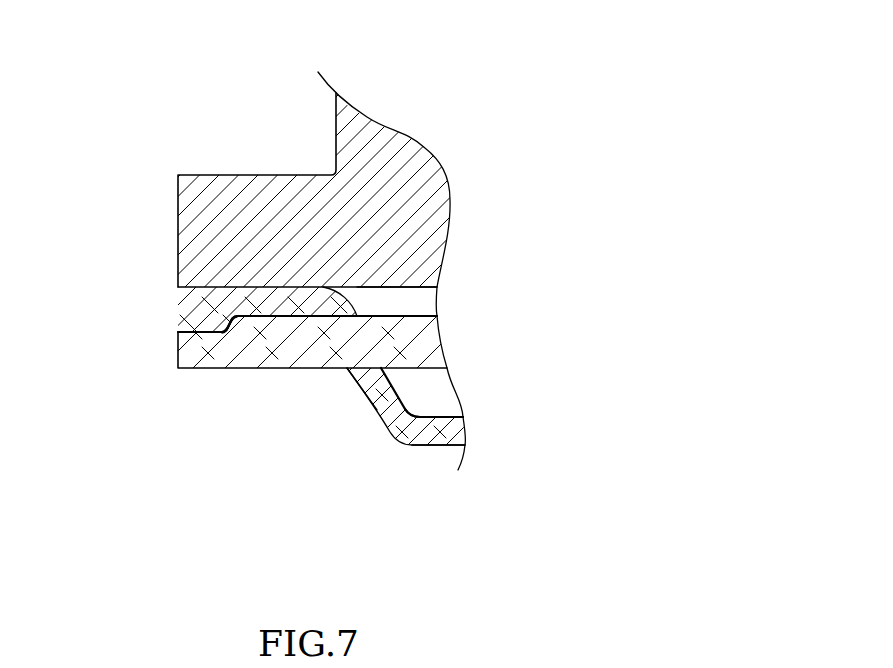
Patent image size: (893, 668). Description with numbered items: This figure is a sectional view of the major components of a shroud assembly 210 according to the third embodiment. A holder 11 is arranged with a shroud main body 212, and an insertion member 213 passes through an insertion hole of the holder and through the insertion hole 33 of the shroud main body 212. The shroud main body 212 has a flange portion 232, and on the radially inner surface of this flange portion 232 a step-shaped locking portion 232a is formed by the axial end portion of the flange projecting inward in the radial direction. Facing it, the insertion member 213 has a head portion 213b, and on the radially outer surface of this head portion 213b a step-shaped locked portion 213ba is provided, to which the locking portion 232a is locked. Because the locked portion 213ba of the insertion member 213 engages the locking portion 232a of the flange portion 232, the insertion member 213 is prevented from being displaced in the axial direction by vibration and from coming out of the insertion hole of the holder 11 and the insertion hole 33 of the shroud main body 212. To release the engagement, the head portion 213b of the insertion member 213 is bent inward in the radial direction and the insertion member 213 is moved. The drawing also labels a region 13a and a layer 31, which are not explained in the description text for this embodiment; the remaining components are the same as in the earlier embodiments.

The shroud assembly 210 is at (223, 110).
The holder 11 is at (178, 196).
The flange portion 232 is at (178, 303).
The locking portion 232a is at (216, 321).
The insertion member 213 is at (177, 348).
The head portion 213b is at (270, 350).
The locked portion 213ba is at (216, 321).
The gap 13a is at (425, 303).
The insertion hole 33 is at (347, 370).
The sheet member 31 is at (395, 445).
The shroud main body 212 is at (442, 446).